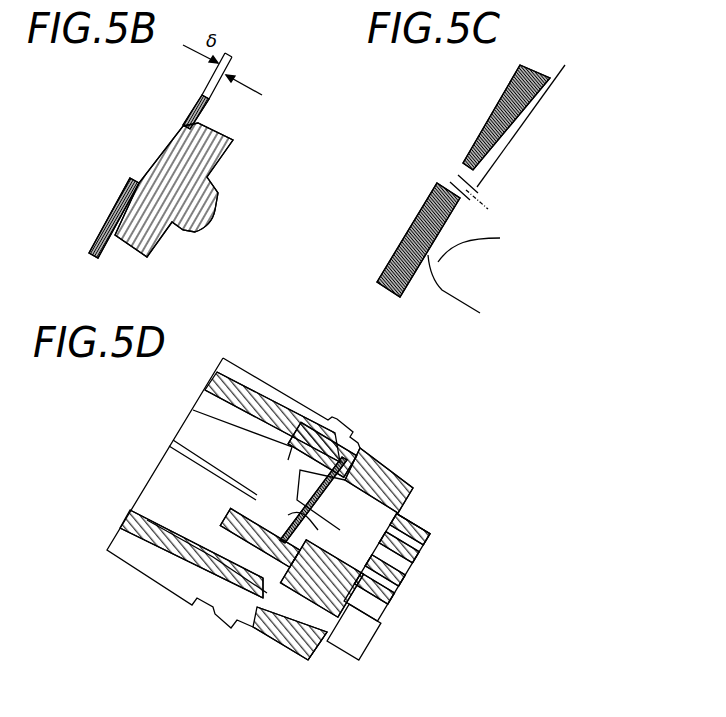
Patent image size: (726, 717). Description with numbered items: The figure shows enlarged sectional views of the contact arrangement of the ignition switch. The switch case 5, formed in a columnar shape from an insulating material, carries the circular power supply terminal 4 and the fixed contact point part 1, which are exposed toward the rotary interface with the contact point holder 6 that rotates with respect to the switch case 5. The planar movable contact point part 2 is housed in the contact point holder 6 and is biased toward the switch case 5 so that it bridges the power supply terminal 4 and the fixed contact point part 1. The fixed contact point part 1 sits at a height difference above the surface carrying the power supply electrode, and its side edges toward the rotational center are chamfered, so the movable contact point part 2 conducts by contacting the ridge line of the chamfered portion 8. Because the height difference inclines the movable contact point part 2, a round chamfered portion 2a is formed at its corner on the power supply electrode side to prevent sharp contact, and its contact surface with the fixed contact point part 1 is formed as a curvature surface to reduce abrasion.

In FIG. 5B, the fixed contact point part 1 is at (205, 106).
In FIG. 5C, the fixed contact point part 1 is at (533, 70).
In FIG. 5B, the movable contact point part 2 is at (200, 210).
In FIG. 5C, the movable contact point part 2 is at (483, 270).
In FIG. 5D, the movable contact point part 2 is at (367, 487).
In FIG. 5C, the round chamfered portion 2a is at (500, 238).
In FIG. 5B, the power supply terminal 4 is at (112, 210).
In FIG. 5C, the power supply terminal 4 is at (402, 282).
In FIG. 5D, the power supply terminal 4 is at (293, 527).
In FIG. 5B, the switch case 5 is at (120, 131).
In FIG. 5D, the switch case 5 is at (165, 555).
In FIG. 5D, the contact point holder 6 is at (423, 525).
In FIG. 5C, the chamfered portion 8 is at (494, 160).